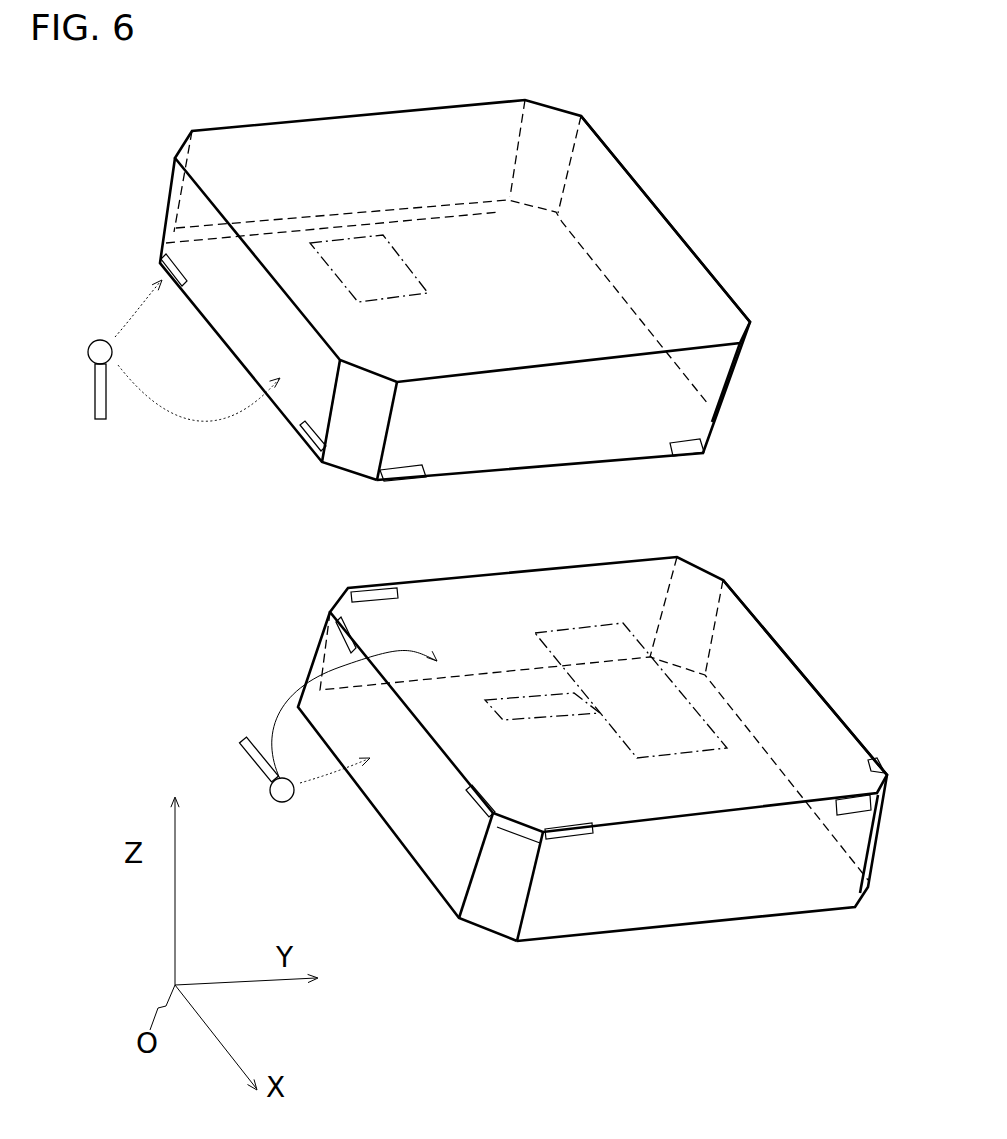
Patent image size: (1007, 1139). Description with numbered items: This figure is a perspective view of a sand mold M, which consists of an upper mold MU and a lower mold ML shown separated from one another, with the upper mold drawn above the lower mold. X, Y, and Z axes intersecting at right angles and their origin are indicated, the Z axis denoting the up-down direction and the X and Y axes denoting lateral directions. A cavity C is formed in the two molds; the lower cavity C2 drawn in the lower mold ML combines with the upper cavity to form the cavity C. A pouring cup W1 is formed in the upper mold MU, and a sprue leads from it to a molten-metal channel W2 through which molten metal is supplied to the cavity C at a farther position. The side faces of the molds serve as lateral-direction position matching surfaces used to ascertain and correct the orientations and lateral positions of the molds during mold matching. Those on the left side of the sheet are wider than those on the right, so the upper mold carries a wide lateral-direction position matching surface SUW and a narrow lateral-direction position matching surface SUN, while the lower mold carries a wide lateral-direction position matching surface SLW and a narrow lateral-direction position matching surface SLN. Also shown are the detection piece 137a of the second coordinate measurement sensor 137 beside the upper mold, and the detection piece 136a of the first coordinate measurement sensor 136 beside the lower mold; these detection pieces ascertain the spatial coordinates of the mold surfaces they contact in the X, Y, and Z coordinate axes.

The sand mold M is at (545, 537).
The upper mold MU is at (505, 259).
The lower mold ML is at (549, 765).
The narrow lateral-direction position matching surface SUN is at (614, 192).
The wide lateral-direction position matching surface SUW is at (173, 294).
The narrow lateral-direction position matching surface SLN is at (721, 556).
The wide lateral-direction position matching surface SLW is at (301, 589).
The pouring cup W1 is at (330, 238).
The molten-metal channel W2 is at (494, 696).
The lower cavity C2 is at (663, 762).
The cavity C is at (642, 834).
The detection piece 137a is at (98, 338).
The second coordinate measurement sensor 137 is at (168, 264).
The detection piece 136a is at (293, 800).
The first coordinate measurement sensor 136 is at (339, 790).